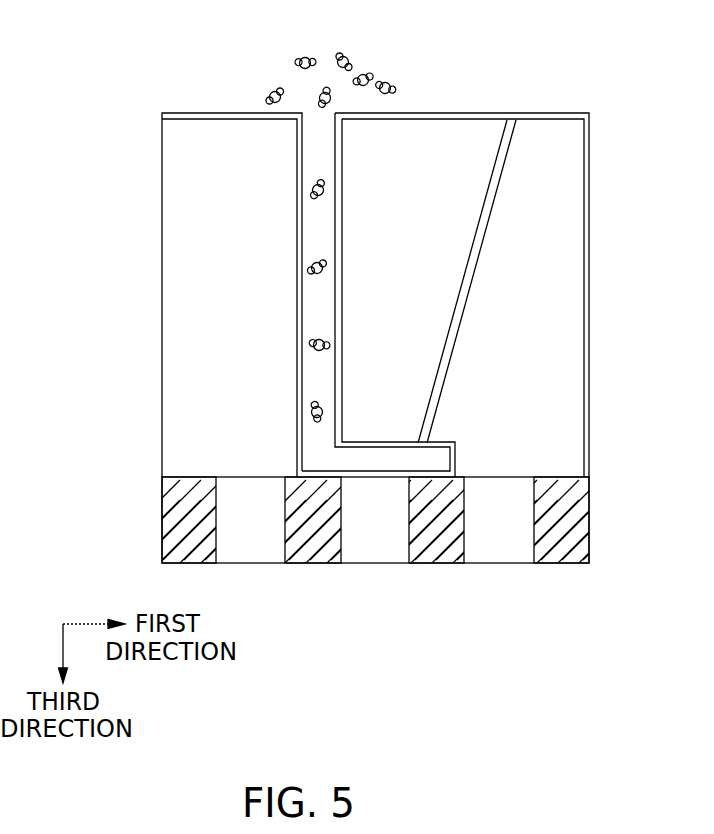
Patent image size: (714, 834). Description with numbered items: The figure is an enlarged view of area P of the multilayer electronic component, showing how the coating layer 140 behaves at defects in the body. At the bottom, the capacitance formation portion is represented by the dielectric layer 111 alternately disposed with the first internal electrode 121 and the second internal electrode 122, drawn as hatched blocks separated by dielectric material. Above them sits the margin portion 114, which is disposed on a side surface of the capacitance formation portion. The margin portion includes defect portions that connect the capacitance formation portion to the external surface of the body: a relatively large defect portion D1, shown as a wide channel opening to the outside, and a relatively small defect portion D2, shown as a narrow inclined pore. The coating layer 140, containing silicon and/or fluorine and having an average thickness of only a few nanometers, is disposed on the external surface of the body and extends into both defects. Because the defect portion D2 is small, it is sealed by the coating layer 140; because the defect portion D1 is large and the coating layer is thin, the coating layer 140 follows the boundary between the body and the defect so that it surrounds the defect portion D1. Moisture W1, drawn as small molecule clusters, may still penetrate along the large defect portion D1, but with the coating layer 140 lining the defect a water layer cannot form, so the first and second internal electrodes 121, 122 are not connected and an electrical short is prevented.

The moisture W1 is at (363, 75).
The coating layer 140 is at (473, 113).
The defect portion D2 is at (514, 130).
The defect portion D1 is at (313, 157).
The margin portion 114 is at (190, 282).
The first internal electrode 121 is at (310, 563).
The second internal electrode 122 is at (434, 563).
The dielectric layer 111 is at (499, 563).
The area P is at (372, 708).